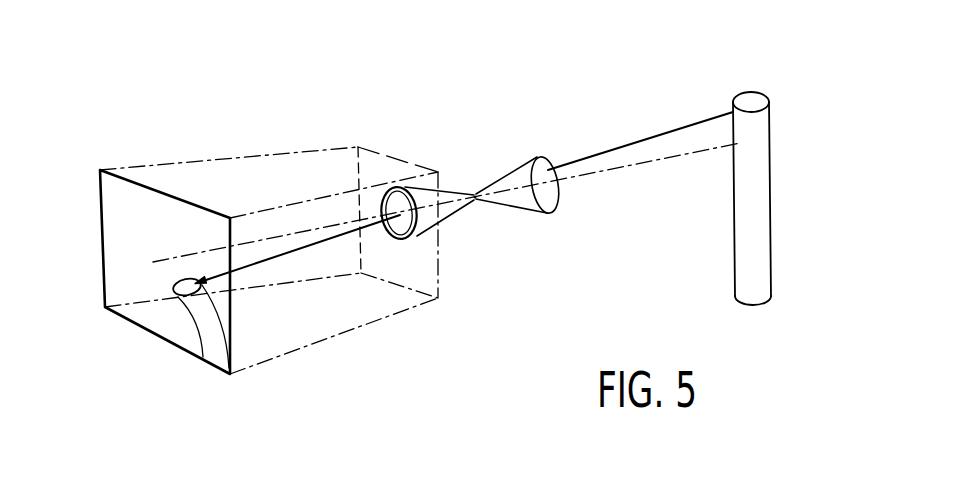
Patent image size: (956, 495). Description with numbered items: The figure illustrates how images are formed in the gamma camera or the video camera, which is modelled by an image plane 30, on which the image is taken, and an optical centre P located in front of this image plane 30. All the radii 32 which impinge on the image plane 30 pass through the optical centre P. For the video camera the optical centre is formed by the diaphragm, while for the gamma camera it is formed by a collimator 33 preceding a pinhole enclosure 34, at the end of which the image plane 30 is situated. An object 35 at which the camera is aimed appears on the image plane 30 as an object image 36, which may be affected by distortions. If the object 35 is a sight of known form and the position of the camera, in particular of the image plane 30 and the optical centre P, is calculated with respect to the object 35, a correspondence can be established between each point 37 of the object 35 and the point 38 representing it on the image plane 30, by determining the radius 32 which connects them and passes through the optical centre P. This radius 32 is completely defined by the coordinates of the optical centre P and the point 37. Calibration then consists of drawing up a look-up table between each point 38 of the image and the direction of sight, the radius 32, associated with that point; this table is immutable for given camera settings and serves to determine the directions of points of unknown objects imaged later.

The image plane 30 is at (112, 197).
The radius 32 is at (268, 260).
The collimator 33 is at (522, 205).
The pinhole enclosure 34 is at (233, 158).
The object 35 is at (758, 167).
The object image 36 is at (210, 346).
The point 37 is at (733, 112).
The point 38 is at (178, 291).
The optical centre P is at (475, 194).